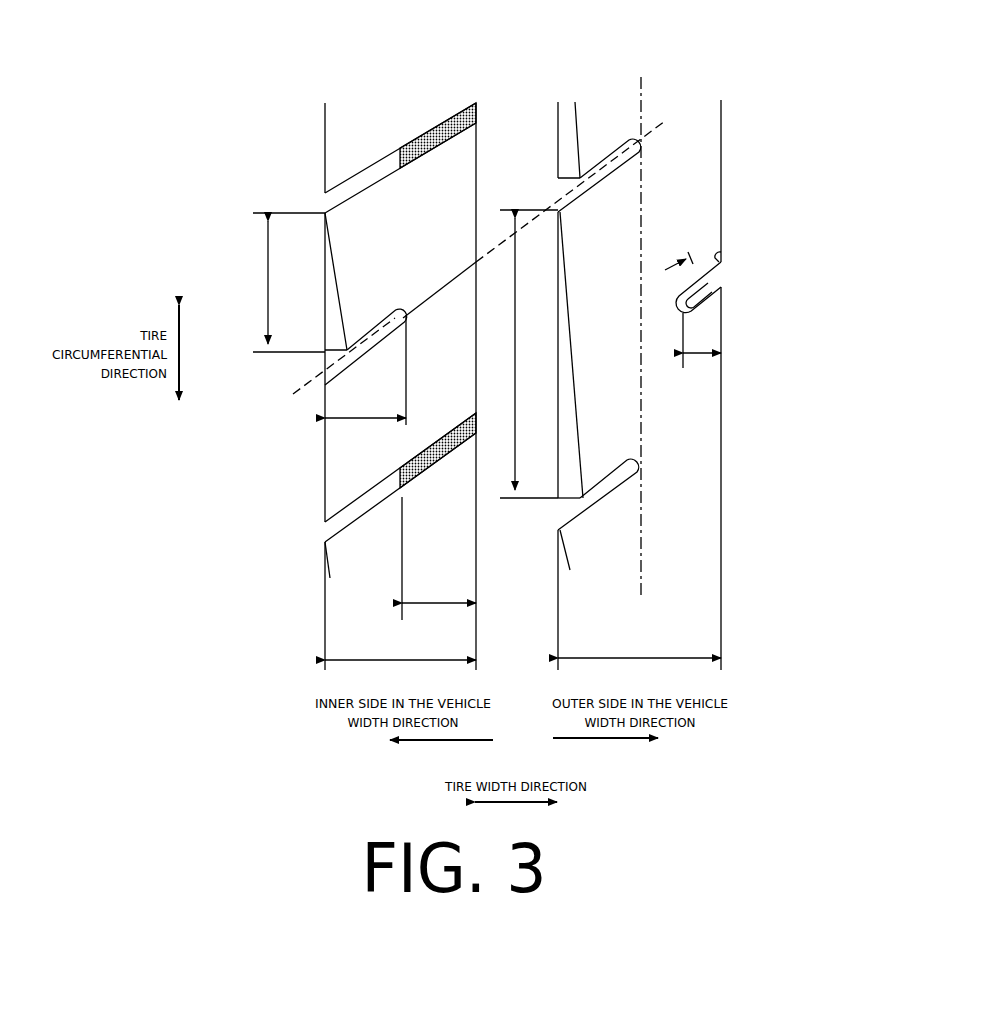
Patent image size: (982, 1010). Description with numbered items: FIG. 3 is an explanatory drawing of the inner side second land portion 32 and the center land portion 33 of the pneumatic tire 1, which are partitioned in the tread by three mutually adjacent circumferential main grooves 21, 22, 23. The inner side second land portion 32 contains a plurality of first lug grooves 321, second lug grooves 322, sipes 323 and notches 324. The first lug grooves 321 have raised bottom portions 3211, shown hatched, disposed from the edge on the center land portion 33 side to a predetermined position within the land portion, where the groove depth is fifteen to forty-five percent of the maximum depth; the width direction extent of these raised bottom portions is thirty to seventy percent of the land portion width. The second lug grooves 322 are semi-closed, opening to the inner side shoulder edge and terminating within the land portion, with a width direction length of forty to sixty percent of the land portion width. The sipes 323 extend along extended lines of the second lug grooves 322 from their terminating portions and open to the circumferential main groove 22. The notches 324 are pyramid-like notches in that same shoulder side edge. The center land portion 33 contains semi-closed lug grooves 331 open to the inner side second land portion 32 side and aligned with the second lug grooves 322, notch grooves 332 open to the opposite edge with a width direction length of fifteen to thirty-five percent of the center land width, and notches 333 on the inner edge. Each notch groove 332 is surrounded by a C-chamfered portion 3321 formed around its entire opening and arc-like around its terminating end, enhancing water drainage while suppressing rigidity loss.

The pneumatic tire 1 is at (746, 42).
The circumferential main groove 21 is at (281, 120).
The circumferential main groove 22 is at (526, 118).
The circumferential main groove 23 is at (771, 118).
The inner side second land portion 32 is at (356, 90).
The center land portion 33 is at (688, 88).
The first lug groove 321 is at (376, 170).
The raised bottom portion 3211 is at (423, 140).
The second lug groove 322 is at (386, 313).
The sipe 323 is at (434, 298).
The notch 324 is at (332, 270).
The lug groove 331 is at (602, 180).
The notch groove 332 is at (712, 280).
The chamfered portion 3321 is at (722, 252).
The notch 333 is at (578, 415).